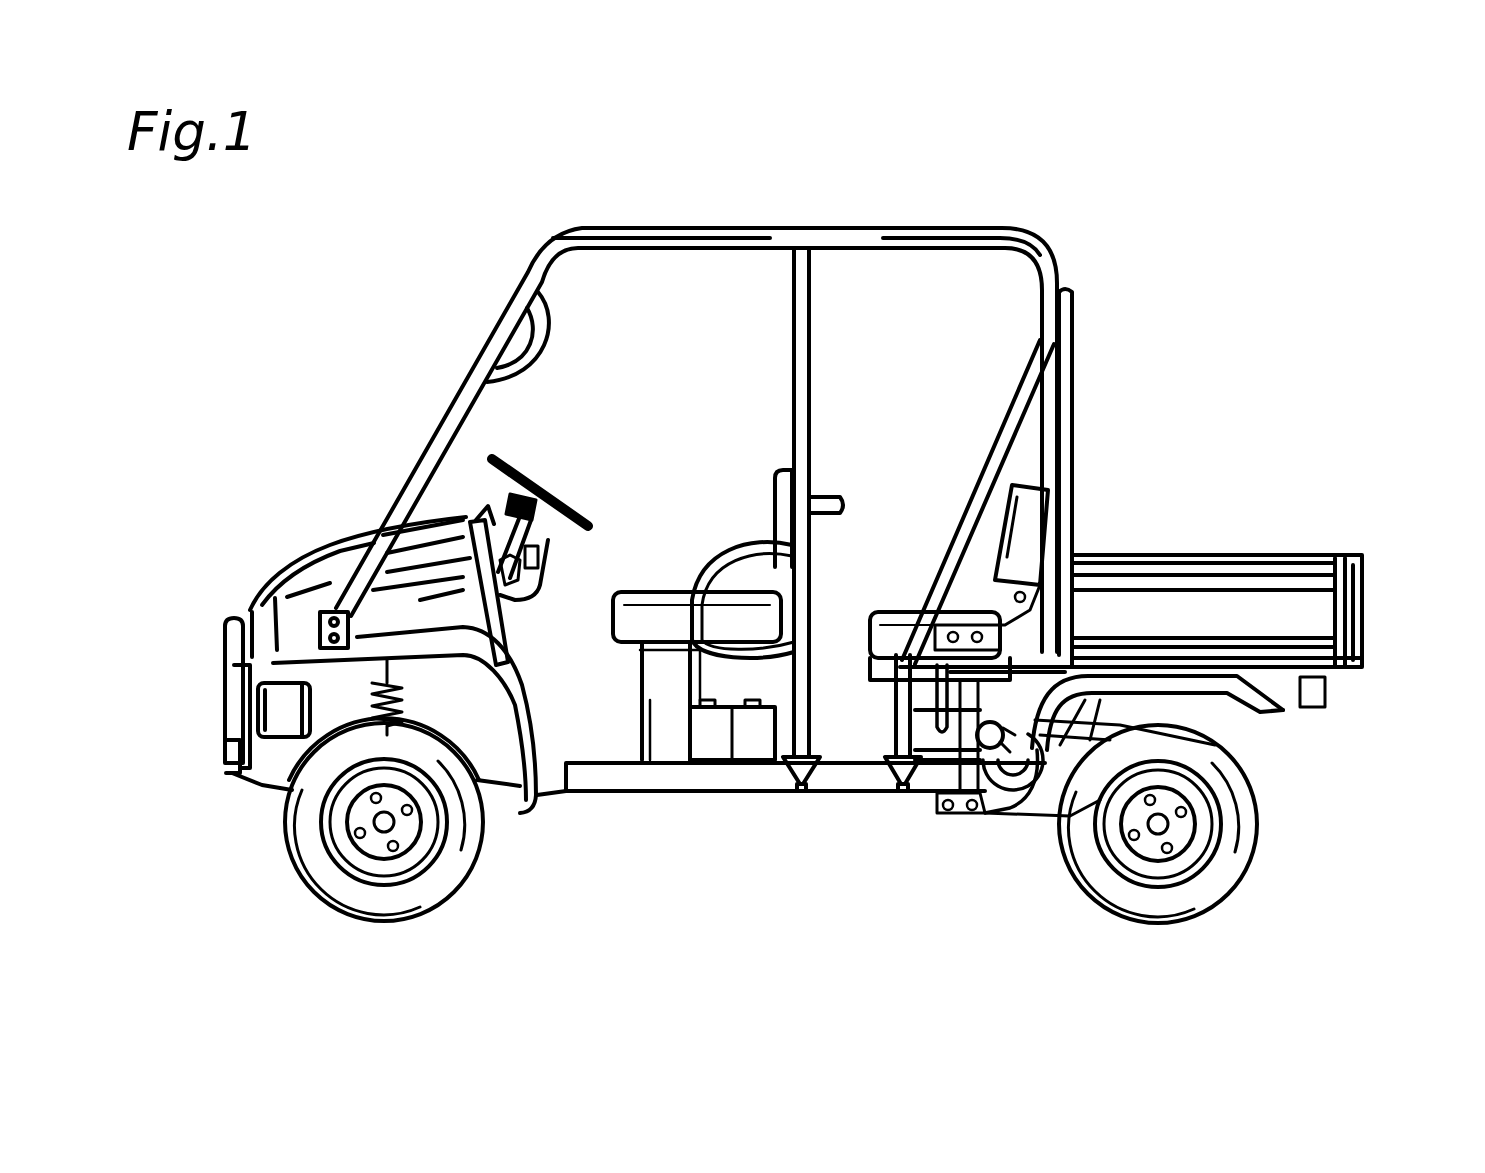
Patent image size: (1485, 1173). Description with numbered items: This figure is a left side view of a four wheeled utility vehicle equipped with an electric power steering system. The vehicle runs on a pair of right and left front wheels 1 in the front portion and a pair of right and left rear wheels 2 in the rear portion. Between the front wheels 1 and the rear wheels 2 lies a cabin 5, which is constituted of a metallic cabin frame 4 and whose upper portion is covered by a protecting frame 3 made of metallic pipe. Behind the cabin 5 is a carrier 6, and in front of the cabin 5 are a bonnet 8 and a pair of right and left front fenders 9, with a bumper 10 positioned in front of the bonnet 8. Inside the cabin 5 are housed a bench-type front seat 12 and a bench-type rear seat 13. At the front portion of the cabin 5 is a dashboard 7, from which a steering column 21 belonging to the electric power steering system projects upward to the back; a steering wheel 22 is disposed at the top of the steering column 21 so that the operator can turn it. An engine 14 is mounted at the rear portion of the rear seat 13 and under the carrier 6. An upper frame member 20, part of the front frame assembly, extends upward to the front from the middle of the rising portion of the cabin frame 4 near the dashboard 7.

The front wheels 1 is at (322, 903).
The rear wheels 2 is at (1228, 895).
The protecting frame 3 is at (540, 240).
The cabin frame 4 is at (594, 768).
The cabin 5 is at (656, 300).
The carrier 6 is at (1312, 620).
The dashboard 7 is at (512, 598).
The bonnet 8 is at (300, 557).
The front fenders 9 is at (290, 665).
The bumper 10 is at (228, 708).
The front seat 12 is at (660, 594).
The rear seat 13 is at (907, 610).
The engine 14 is at (1000, 693).
The upper frame member 20 is at (455, 482).
The steering column 21 is at (487, 517).
The steering wheel 22 is at (509, 462).